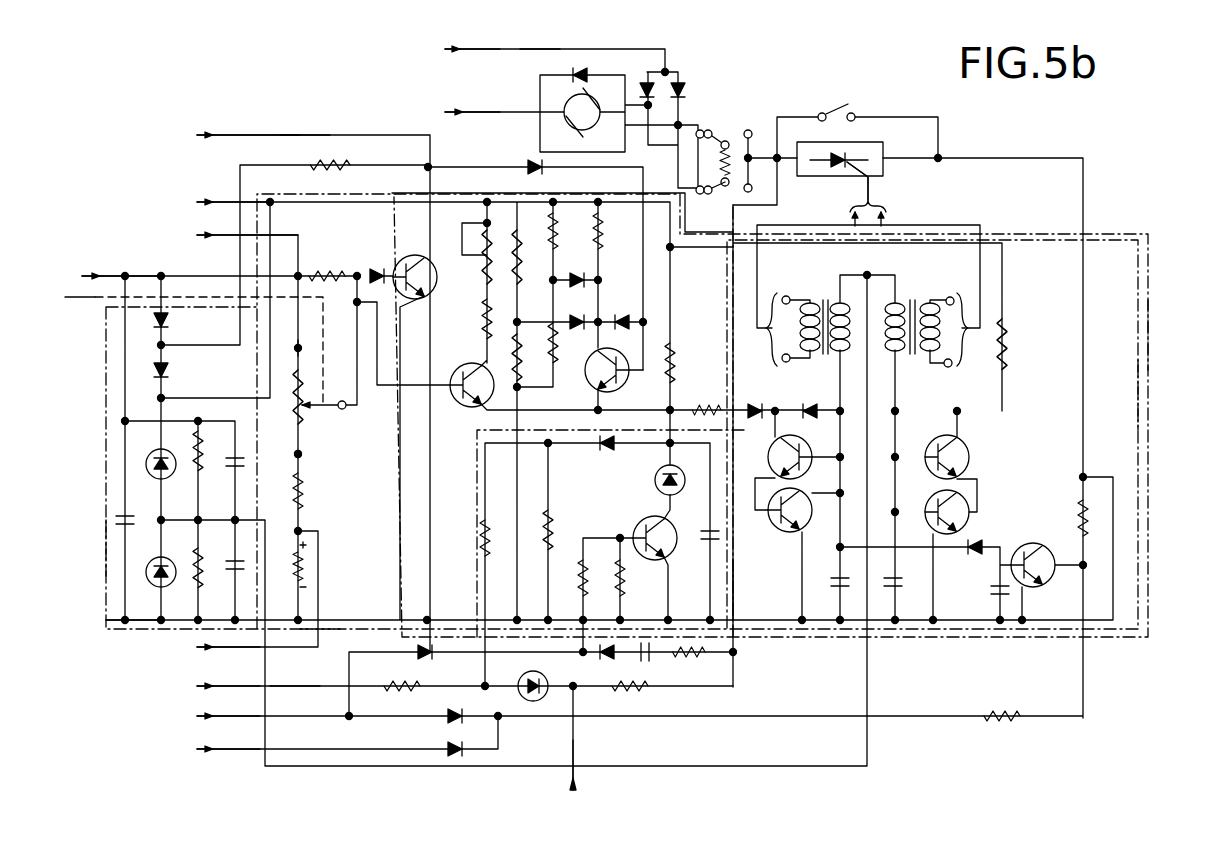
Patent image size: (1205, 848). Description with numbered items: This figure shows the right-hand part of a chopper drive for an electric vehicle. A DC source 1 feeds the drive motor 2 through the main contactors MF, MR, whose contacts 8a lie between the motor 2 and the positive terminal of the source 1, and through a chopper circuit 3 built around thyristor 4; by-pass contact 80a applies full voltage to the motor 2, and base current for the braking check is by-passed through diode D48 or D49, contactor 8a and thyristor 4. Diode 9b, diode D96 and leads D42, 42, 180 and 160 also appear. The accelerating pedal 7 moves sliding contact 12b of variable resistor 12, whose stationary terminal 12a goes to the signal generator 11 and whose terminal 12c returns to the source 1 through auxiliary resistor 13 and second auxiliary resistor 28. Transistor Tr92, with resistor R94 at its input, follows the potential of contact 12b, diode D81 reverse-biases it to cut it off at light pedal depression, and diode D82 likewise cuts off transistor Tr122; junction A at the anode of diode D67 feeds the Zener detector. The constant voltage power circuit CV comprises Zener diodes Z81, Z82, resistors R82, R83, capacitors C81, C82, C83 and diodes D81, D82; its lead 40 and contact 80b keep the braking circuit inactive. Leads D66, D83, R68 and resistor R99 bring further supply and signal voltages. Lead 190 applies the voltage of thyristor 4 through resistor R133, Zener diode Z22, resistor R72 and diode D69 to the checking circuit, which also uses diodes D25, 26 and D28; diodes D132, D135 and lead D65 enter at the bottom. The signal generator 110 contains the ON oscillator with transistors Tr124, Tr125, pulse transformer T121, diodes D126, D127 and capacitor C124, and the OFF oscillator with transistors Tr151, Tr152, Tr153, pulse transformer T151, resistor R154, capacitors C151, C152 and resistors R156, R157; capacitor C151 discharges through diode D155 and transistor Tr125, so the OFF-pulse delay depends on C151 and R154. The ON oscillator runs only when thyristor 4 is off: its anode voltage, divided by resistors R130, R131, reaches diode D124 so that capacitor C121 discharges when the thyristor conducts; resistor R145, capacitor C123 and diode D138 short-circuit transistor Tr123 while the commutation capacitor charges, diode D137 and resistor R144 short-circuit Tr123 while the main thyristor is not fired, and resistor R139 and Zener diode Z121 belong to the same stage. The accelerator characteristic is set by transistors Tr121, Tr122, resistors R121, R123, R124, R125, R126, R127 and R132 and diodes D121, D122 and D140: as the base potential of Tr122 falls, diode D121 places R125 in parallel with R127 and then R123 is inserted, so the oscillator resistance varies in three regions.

The input line D42 is at (469, 40).
The line 42 is at (543, 49).
The diode 9b is at (568, 72).
The diode D49 is at (643, 82).
The diode D48 is at (688, 90).
The drive motor 2 is at (566, 108).
The DC source 1 is at (468, 112).
The relay contactor MR is at (714, 152).
The relay contactor MF is at (713, 193).
The main contactor contacts 8a is at (750, 131).
The by-pass contact 80a is at (850, 110).
The chopper circuit 3 is at (884, 155).
The thyristor 4 is at (848, 180).
The diode D96 is at (548, 171).
The input line D66 is at (247, 126).
The line 180 is at (298, 135).
The resistor R99 is at (330, 156).
The diode D67 is at (229, 192).
The relay contact 80b is at (246, 226).
The input line D83,80b D83 is at (102, 266).
The accelerating pedal 7 is at (72, 298).
The resistor R94 is at (351, 268).
The transistor Tr92 is at (425, 284).
The diode D81 is at (177, 321).
The diode D82 is at (177, 371).
The stationary terminal 12a is at (298, 348).
The variable resistor 12 is at (294, 410).
The sliding contact 12b is at (342, 410).
The stationary terminal 12c is at (301, 454).
The auxiliary resistor 13 is at (302, 497).
The second auxiliary resistor 28 is at (294, 562).
The Zener diode Z81 is at (151, 458).
The resistor R82 is at (211, 449).
The capacitor C82 is at (226, 466).
The capacitor C81 is at (135, 509).
The Zener diode Z82 is at (151, 565).
The resistor R83 is at (211, 560).
The capacitor C83 is at (226, 574).
The constant voltage power circuit CV is at (104, 552).
The line R68 is at (109, 610).
The unit 160 is at (322, 628).
The diode D28 is at (210, 647).
The lead 190 is at (292, 684).
The diode D69 is at (211, 685).
The resistor R72 is at (402, 679).
The diode D25 is at (211, 716).
The diode D132 is at (467, 709).
The input line D65 is at (211, 749).
The diode D135 is at (474, 754).
The Zener diode Z22 is at (533, 680).
The diode D137 is at (444, 656).
The diode D138 is at (618, 663).
The capacitor C123 is at (648, 657).
The resistor R145 is at (694, 661).
The resistor R133 is at (630, 696).
The diode 26 is at (571, 781).
The resistor R144 is at (583, 590).
The resistor R139 is at (620, 588).
The resistor R130 is at (484, 544).
The resistor R131 is at (564, 527).
The transistor Tr123 is at (636, 524).
The zener diode Z121 is at (655, 480).
The diode D124 is at (614, 450).
The capacitor C121 is at (706, 547).
The lead 40 is at (735, 590).
The resistor R121 is at (487, 278).
The resistor R123 is at (504, 257).
The resistor R125 is at (539, 230).
The resistor R127 is at (581, 230).
The resistor R124 is at (507, 302).
The resistor R126 is at (535, 354).
The diode D121 is at (575, 270).
The diode D122 is at (577, 328).
The diode D140 is at (625, 315).
The transistor Tr121 is at (466, 395).
The transistor Tr122 is at (616, 379).
The resistor R132 is at (690, 363).
The diode D126 is at (733, 405).
The diode D127 is at (812, 405).
The pulse transformer T121 is at (808, 322).
The pulse transformer T151 is at (926, 322).
The resistor R154 is at (1005, 349).
The signal generator 110 is at (1150, 336).
The signal generator 11 is at (1160, 393).
The transistor Tr124 is at (770, 456).
The transistor Tr125 is at (793, 532).
The capacitor C124 is at (830, 580).
The capacitor C152 is at (906, 582).
The capacitor C151 is at (988, 588).
The diode D155 is at (975, 557).
The transistor Tr151 is at (970, 457).
The transistor Tr152 is at (970, 512).
The transistor Tr153 is at (1038, 544).
The resistor R157 is at (1078, 508).
The resistor R156 is at (1002, 724).